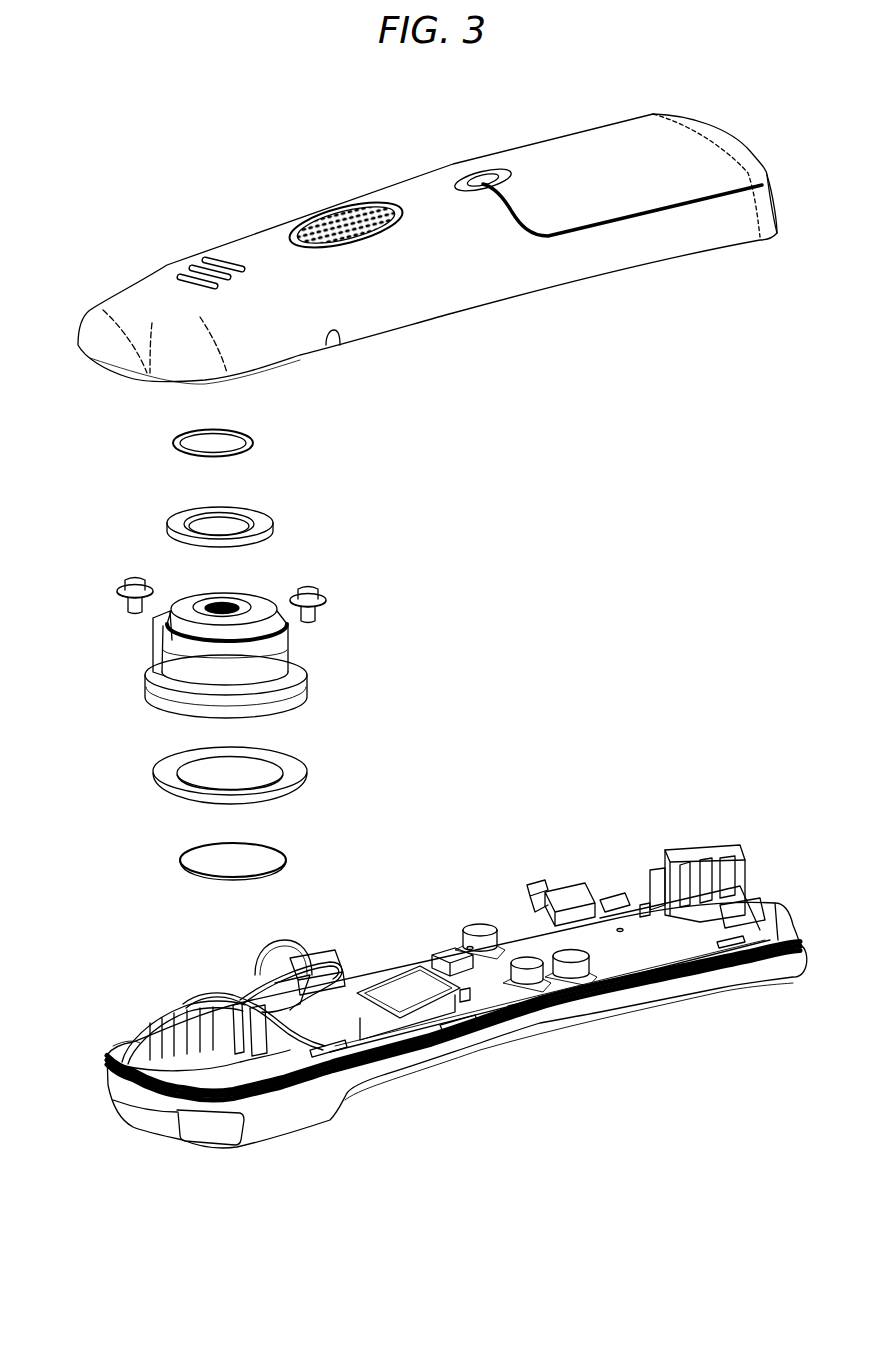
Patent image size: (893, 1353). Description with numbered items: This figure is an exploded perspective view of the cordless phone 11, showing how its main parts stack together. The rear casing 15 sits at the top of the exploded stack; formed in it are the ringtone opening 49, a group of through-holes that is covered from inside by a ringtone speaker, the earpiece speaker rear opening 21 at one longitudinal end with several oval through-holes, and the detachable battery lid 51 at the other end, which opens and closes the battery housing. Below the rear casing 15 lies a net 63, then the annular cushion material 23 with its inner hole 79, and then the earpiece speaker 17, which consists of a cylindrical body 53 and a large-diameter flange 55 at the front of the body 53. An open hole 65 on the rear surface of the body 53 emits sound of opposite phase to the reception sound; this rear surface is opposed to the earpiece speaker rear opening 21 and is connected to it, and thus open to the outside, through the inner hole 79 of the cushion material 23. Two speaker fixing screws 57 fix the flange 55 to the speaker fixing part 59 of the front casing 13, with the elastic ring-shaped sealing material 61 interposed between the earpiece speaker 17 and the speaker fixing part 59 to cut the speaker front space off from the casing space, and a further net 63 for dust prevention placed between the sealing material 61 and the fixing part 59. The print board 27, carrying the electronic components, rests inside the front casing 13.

The cordless phone 11 is at (241, 181).
The front casing 13 is at (290, 1118).
The rear casing 15 is at (486, 285).
The earpiece speaker 17 is at (127, 675).
The earpiece speaker rear opening 21 is at (176, 274).
The cushion material 23 is at (272, 520).
The print board 27 is at (628, 935).
The ringtone opening 49 is at (378, 212).
The battery lid 51 is at (566, 157).
The body 53 is at (284, 652).
The flange 55 is at (305, 683).
The speaker fixing screw 57 is at (118, 588).
The speaker fixing part 59 is at (208, 1000).
The sealing material 61 is at (307, 762).
The net 63 is at (255, 440).
The open hole 65 is at (214, 600).
The inner hole 79 is at (210, 516).